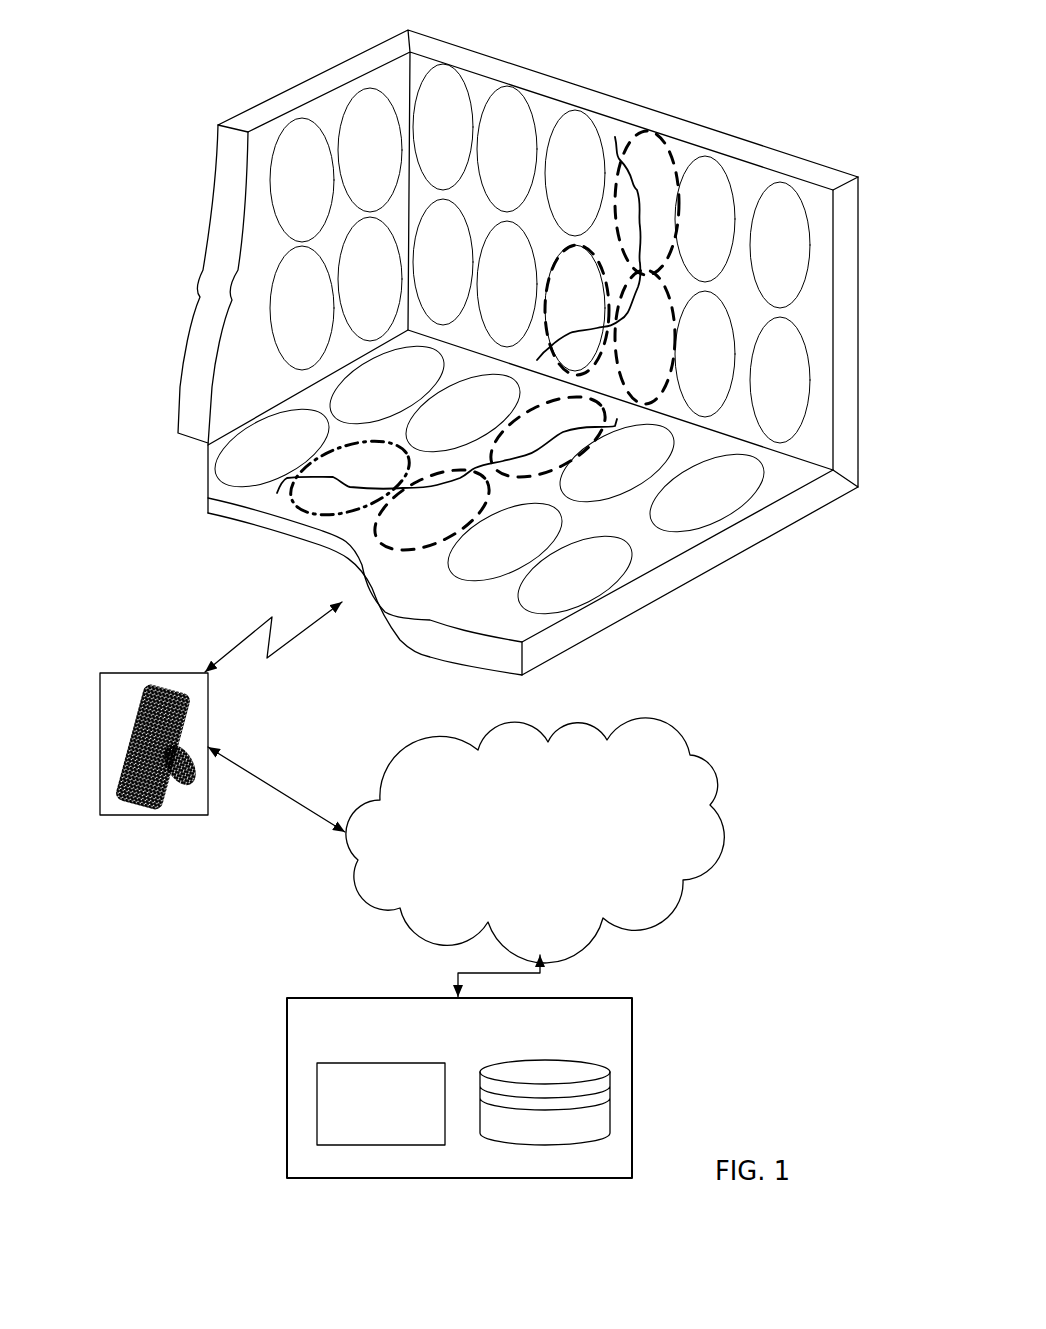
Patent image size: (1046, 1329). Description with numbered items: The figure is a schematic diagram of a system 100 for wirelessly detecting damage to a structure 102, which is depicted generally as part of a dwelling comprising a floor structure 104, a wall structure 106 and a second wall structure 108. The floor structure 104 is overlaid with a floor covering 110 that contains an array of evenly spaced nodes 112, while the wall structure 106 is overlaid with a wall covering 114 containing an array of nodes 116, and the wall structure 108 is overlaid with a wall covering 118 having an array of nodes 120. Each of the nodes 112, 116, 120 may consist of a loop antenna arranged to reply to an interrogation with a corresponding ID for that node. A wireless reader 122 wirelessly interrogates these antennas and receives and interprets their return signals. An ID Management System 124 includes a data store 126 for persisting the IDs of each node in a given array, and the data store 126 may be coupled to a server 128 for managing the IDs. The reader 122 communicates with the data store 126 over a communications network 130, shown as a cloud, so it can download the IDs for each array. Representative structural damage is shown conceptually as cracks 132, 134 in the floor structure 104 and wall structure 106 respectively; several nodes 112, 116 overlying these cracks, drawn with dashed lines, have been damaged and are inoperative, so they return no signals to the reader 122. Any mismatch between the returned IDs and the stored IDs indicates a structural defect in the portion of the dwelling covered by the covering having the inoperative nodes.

The system 100 is at (700, 685).
The structure 102 is at (553, 60).
The floor structure 104 is at (718, 543).
The wall structure 106 is at (840, 176).
The wall structure 108 is at (203, 260).
The floor covering 110 is at (780, 480).
The nodes 112 is at (373, 455).
The wall covering 114 is at (750, 183).
The nodes 116 is at (520, 177).
The wall covering 118 is at (243, 340).
The nodes 120 is at (298, 178).
The wireless reader 122 is at (152, 672).
The ID Management System 124 is at (633, 1040).
The data store 126 is at (563, 1148).
The server 128 is at (395, 1136).
The communications network 130 is at (517, 886).
The crack 132 is at (335, 500).
The crack 134 is at (635, 210).